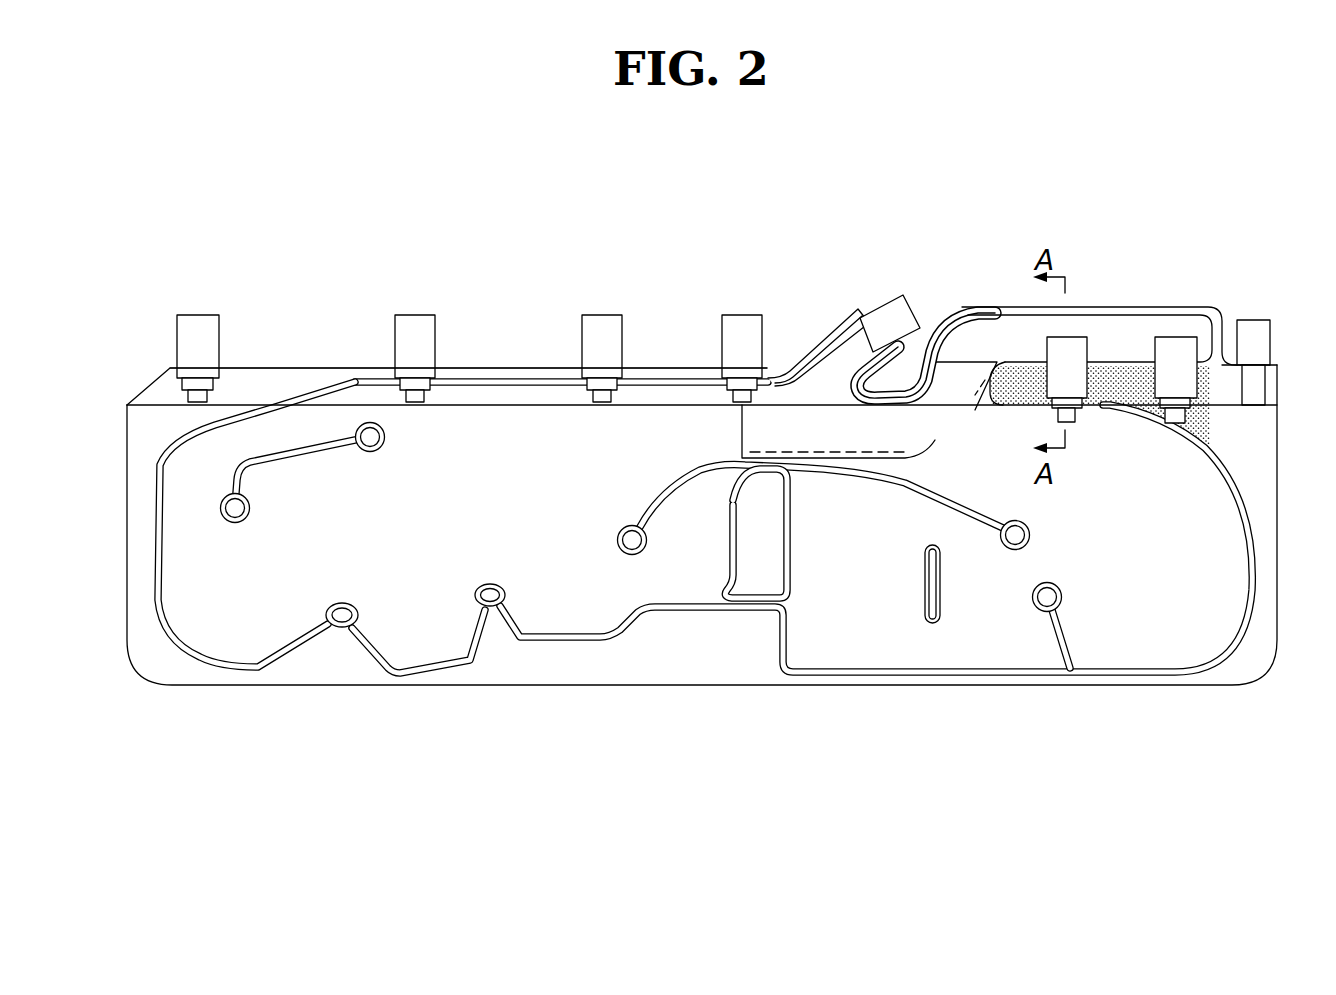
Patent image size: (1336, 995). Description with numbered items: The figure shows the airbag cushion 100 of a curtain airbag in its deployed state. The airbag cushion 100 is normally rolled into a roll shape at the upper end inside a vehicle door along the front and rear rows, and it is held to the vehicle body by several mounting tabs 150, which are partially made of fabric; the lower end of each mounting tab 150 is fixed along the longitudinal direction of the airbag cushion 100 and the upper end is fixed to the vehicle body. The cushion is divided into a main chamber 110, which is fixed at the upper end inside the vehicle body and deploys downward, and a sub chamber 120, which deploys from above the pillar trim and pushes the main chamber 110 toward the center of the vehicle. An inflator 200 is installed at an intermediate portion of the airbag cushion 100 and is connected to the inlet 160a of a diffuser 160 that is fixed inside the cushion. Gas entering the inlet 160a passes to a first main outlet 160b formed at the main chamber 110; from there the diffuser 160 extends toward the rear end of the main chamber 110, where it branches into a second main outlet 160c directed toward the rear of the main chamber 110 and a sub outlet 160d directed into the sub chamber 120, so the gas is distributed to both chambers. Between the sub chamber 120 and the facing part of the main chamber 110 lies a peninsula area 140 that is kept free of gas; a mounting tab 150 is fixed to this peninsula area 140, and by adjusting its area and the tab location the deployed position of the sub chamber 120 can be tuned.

The airbag cushion 100 is at (525, 329).
The main chamber 110 is at (572, 578).
The sub chamber 120 is at (1012, 337).
The peninsula area 140 is at (1128, 367).
The mounting tab 150 is at (412, 325).
The diffuser 160 is at (843, 433).
The inlet 160a is at (877, 323).
The first main outlet 160b is at (742, 430).
The second main outlet 160c is at (967, 417).
The sub outlet 160d is at (968, 363).
The inflator 200 is at (878, 322).